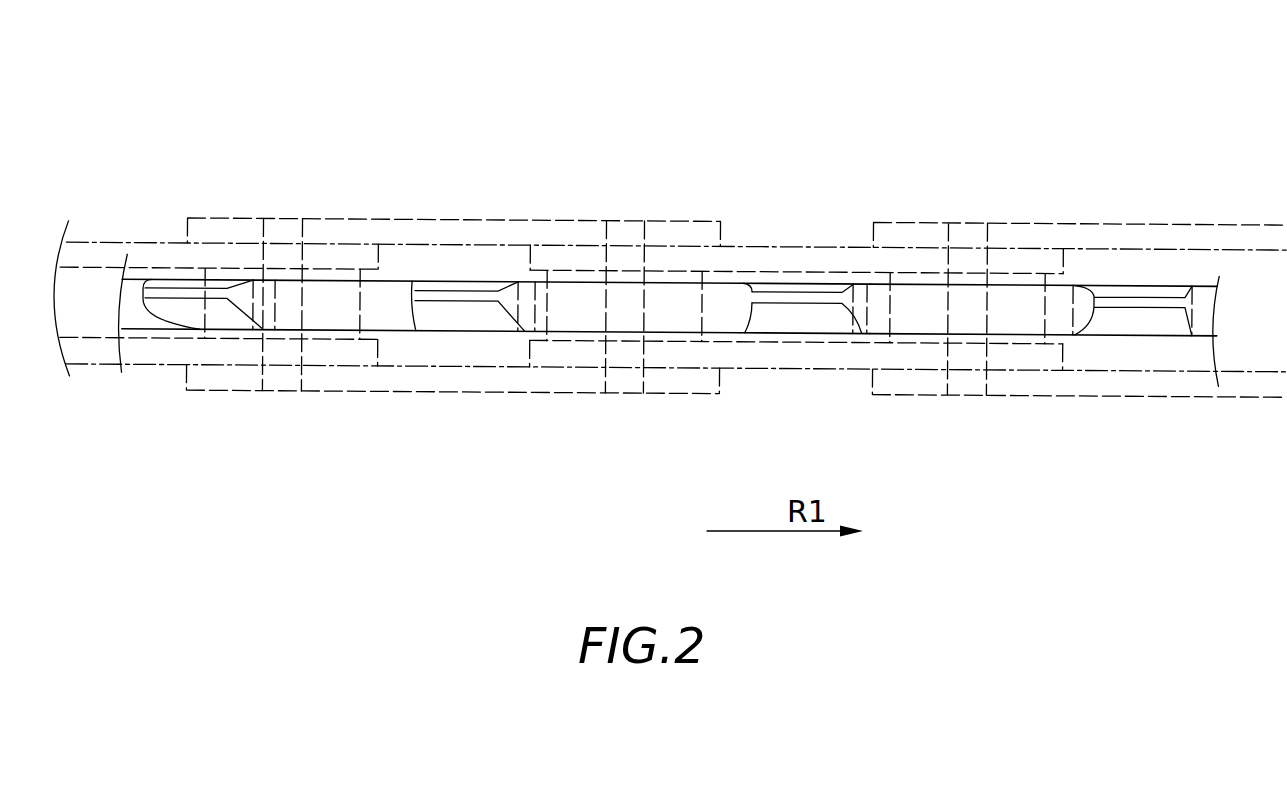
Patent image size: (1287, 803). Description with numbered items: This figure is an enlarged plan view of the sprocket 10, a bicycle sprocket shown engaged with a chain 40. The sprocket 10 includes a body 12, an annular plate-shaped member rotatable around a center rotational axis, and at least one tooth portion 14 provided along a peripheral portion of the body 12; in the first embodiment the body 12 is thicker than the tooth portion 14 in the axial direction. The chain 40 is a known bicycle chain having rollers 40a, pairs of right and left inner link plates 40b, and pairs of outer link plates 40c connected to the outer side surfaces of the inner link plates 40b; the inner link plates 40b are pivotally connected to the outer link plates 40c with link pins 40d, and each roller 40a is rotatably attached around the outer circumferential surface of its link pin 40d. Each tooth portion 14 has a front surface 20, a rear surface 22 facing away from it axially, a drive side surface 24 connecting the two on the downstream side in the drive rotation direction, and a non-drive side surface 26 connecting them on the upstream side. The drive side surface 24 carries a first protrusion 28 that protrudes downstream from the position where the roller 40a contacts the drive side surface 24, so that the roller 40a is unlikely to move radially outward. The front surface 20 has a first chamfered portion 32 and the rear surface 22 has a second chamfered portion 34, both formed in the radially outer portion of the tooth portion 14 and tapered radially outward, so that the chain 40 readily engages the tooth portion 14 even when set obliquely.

The sprocket 10 is at (399, 258).
The body 12 is at (668, 281).
The tooth portion 14 is at (776, 259).
The front surface 20 is at (780, 349).
The rear surface 22 is at (755, 258).
The drive side surface 24 is at (857, 316).
The non-drive side surface 26 is at (742, 307).
The first protrusion 28 is at (867, 297).
The first chamfered portion 32 is at (811, 323).
The second chamfered portion 34 is at (830, 286).
The chain 40 is at (566, 208).
The roller 40a is at (360, 313).
The inner link plate 40b is at (312, 243).
The outer link plate 40c is at (498, 218).
The link pin 40d is at (305, 267).